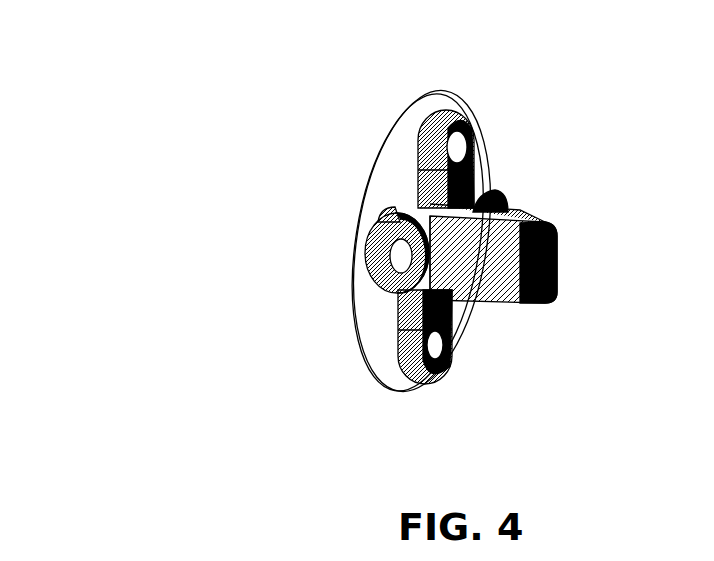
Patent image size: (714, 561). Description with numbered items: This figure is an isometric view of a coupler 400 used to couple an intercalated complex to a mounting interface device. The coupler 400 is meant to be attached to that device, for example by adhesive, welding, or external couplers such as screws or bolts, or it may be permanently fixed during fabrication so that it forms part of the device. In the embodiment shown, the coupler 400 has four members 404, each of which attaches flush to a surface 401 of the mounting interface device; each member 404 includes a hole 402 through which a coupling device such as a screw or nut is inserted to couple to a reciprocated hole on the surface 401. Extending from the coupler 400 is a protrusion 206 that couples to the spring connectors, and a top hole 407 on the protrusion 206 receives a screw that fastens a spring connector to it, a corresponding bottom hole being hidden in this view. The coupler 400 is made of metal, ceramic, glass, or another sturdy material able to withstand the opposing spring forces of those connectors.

The coupler 400 is at (74, 136).
The surface 401 is at (385, 329).
The hole 402 is at (405, 258).
The member 404 is at (422, 178).
The top hole 407 is at (510, 208).
The protrusion 206 is at (497, 267).